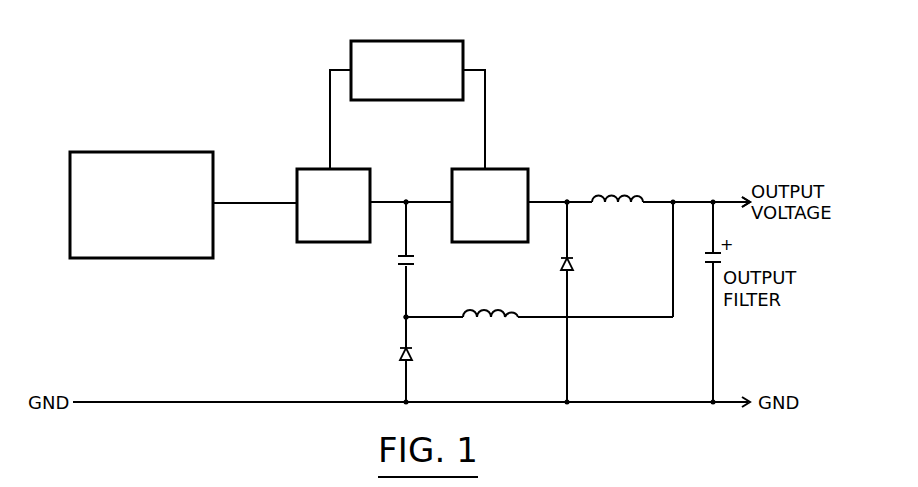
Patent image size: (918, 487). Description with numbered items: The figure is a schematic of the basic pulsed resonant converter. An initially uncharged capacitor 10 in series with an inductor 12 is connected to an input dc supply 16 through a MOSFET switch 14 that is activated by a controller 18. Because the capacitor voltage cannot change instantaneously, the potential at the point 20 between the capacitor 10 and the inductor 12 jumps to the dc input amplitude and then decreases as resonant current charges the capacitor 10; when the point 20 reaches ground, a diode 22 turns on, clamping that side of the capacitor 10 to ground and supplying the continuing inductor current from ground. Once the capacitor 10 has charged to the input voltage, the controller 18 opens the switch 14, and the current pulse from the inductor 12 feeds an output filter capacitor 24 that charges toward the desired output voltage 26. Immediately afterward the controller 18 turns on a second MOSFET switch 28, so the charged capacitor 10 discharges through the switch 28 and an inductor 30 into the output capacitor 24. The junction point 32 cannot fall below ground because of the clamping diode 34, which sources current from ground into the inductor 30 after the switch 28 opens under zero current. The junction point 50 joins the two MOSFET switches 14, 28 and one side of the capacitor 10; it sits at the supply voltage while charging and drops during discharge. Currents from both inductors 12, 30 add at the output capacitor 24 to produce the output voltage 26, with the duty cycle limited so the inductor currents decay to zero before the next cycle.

The capacitor 10 is at (396, 259).
The inductor 12 is at (490, 321).
The MOSFET switch 14 is at (310, 169).
The input dc supply 16 is at (130, 152).
The controller 18 is at (386, 41).
The point 20 is at (406, 318).
The diode 22 is at (418, 352).
The output filter capacitor 24 is at (706, 262).
The output voltage 26 is at (740, 198).
The MOSFET switch 28 is at (515, 169).
The inductor 30 is at (640, 196).
The junction point 32 is at (567, 196).
The diode 34 is at (578, 263).
The junction point 50 is at (406, 202).